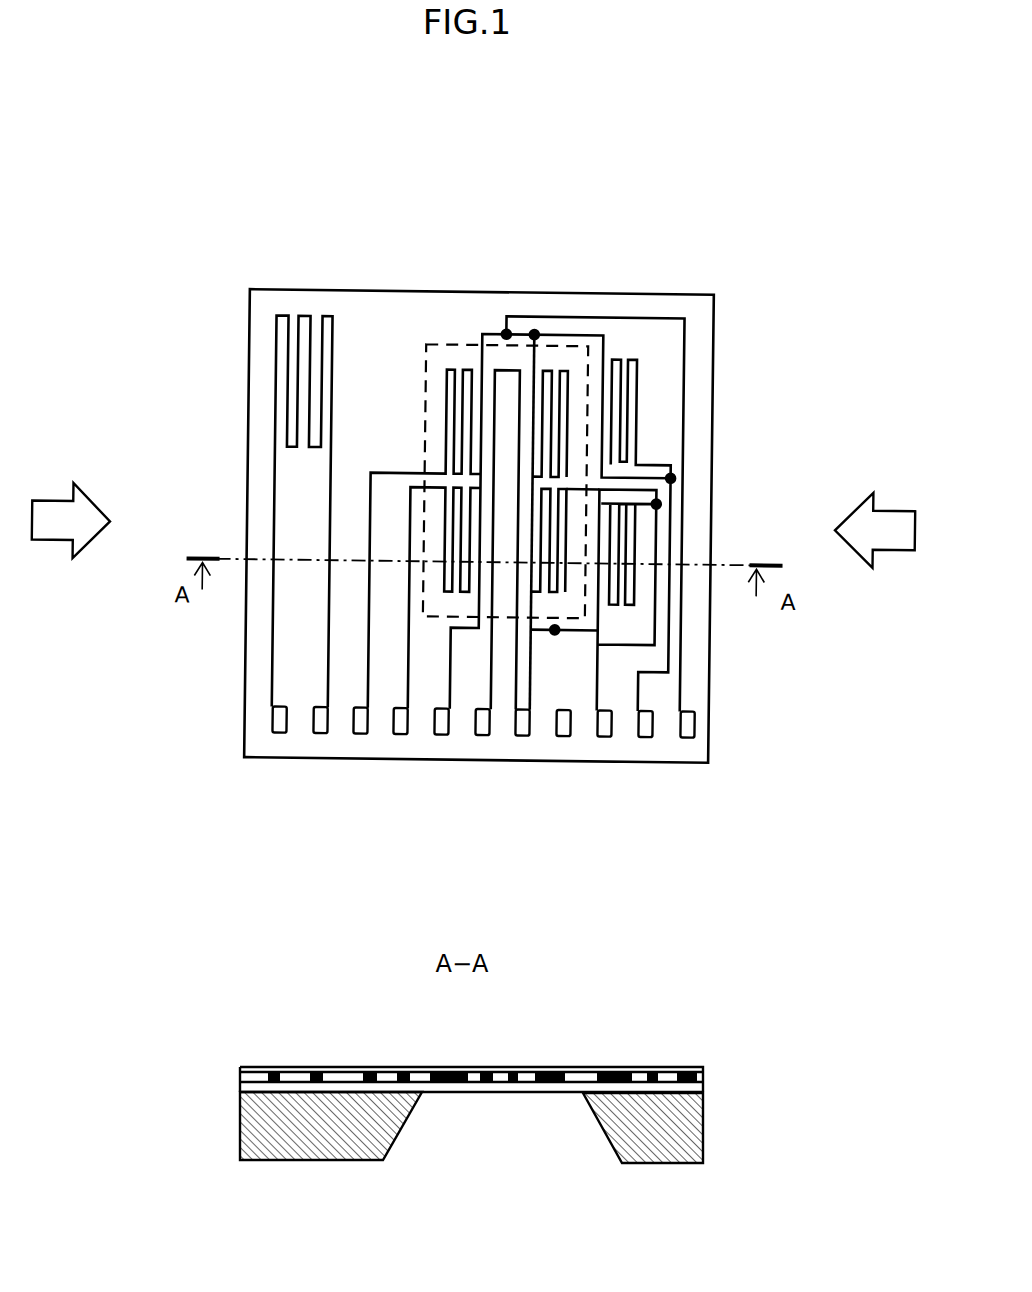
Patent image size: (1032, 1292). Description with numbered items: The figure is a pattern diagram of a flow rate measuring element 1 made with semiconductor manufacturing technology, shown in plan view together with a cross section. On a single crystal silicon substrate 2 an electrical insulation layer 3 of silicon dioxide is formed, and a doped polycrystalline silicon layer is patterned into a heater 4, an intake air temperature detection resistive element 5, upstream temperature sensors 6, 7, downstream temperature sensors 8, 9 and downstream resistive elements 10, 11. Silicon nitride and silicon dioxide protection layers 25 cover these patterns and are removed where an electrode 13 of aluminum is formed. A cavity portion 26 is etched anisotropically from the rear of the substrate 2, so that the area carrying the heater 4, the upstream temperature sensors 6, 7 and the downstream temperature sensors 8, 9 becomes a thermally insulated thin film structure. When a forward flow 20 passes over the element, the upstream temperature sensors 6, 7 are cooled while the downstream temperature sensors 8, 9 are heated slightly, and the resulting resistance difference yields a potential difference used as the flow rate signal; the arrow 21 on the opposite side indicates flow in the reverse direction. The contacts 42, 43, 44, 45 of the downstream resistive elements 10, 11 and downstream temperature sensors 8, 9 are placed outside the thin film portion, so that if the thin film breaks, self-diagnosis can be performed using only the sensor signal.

The flow rate measuring element 1 is at (394, 304).
The single crystal silicon substrate 2 is at (246, 1120).
The electrical insulation layer 3 is at (246, 1086).
The heater 4 is at (521, 387).
The intake air temperature detection resistive element 5 is at (294, 348).
The upstream temperature sensor 6 is at (456, 456).
The upstream temperature sensor 7 is at (456, 554).
The downstream temperature sensor 8 is at (541, 417).
The downstream temperature sensor 9 is at (557, 589).
The downstream resistive element 10 is at (624, 432).
The downstream resistive element 11 is at (636, 564).
The electrode 13 is at (279, 737).
The forward flow 20 is at (48, 512).
The acceleration direction 21 is at (897, 518).
The protection layer 25 is at (704, 1068).
The cavity portion 26 is at (510, 1128).
The contact 42 is at (670, 476).
The contact 43 is at (535, 332).
The contact 44 is at (656, 502).
The contact 45 is at (556, 633).